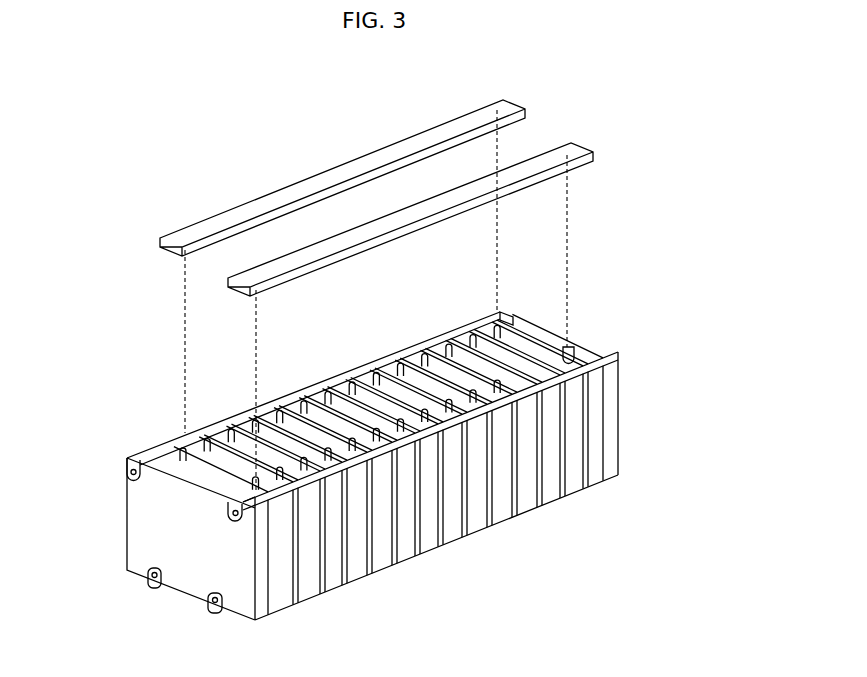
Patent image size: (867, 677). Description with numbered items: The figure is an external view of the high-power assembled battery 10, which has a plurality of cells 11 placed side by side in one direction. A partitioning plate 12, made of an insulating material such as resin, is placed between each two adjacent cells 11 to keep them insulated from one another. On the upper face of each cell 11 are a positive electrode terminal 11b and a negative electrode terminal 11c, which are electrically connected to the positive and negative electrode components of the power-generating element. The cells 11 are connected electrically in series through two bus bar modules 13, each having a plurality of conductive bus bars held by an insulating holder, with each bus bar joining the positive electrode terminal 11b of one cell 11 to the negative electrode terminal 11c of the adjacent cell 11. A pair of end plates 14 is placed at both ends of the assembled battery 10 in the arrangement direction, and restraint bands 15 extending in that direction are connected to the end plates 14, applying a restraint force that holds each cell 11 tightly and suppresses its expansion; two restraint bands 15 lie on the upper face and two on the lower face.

The high-power assembled battery 10 is at (445, 598).
The cell 11 is at (208, 468).
The positive electrode terminal 11b is at (235, 497).
The negative electrode terminal 11c is at (497, 315).
The partitioning plate 12 is at (198, 452).
The bus bar module 13 is at (289, 192).
The end plate 14 is at (140, 533).
The restraint band 15 is at (148, 587).